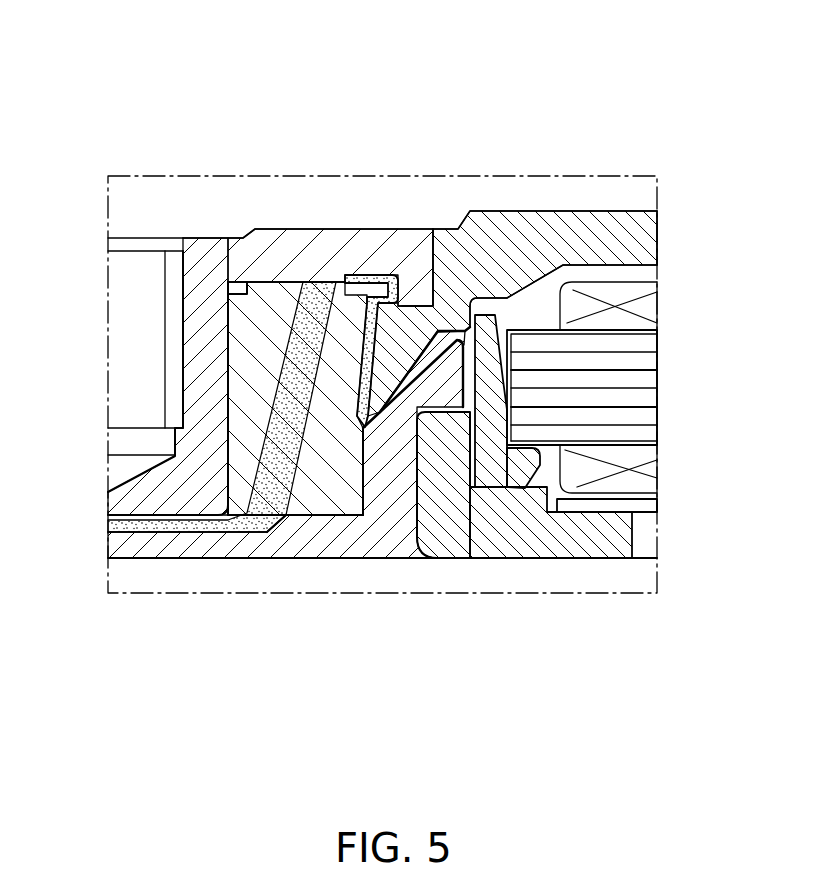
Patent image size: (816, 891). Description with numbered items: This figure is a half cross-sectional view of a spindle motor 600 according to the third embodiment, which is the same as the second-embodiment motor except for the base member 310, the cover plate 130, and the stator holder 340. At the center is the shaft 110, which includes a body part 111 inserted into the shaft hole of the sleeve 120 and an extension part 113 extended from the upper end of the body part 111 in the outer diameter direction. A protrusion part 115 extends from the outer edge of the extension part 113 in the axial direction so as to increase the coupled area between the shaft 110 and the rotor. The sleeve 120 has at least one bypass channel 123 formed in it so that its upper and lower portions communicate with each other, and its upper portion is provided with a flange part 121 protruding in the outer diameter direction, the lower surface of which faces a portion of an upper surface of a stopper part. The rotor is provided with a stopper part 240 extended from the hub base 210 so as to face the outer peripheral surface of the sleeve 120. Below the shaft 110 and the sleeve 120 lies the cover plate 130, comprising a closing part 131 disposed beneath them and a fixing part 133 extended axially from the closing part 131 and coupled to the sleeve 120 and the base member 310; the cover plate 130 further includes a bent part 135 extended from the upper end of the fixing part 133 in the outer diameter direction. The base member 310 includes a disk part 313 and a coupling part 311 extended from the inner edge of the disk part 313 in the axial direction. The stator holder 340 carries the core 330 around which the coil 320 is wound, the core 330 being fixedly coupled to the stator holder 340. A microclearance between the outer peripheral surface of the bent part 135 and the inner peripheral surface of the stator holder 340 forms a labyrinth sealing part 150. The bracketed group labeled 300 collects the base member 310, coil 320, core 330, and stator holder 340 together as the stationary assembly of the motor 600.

The spindle motor 600 is at (398, 47).
The shaft 110 is at (270, 282).
The body part 111 is at (203, 333).
The extension part 113 is at (318, 257).
The protrusion part 115 is at (425, 295).
The sleeve 120 is at (230, 448).
The flange part 121 is at (284, 424).
The bypass channel 123 is at (355, 287).
The cover plate 130 is at (382, 522).
The closing part 131 is at (243, 543).
The fixing part 133 is at (388, 478).
The bent part 135 is at (390, 468).
The labyrinth sealing part 150 is at (508, 347).
The hub base 210 is at (567, 237).
The stopper part 240 is at (420, 297).
The lens driving assembly 300 is at (588, 536).
The base member 310 is at (524, 562).
The coupling part 311 is at (455, 473).
The disk part 313 is at (510, 520).
The coil 320 is at (592, 478).
The core 330 is at (633, 388).
The stator holder 340 is at (468, 355).